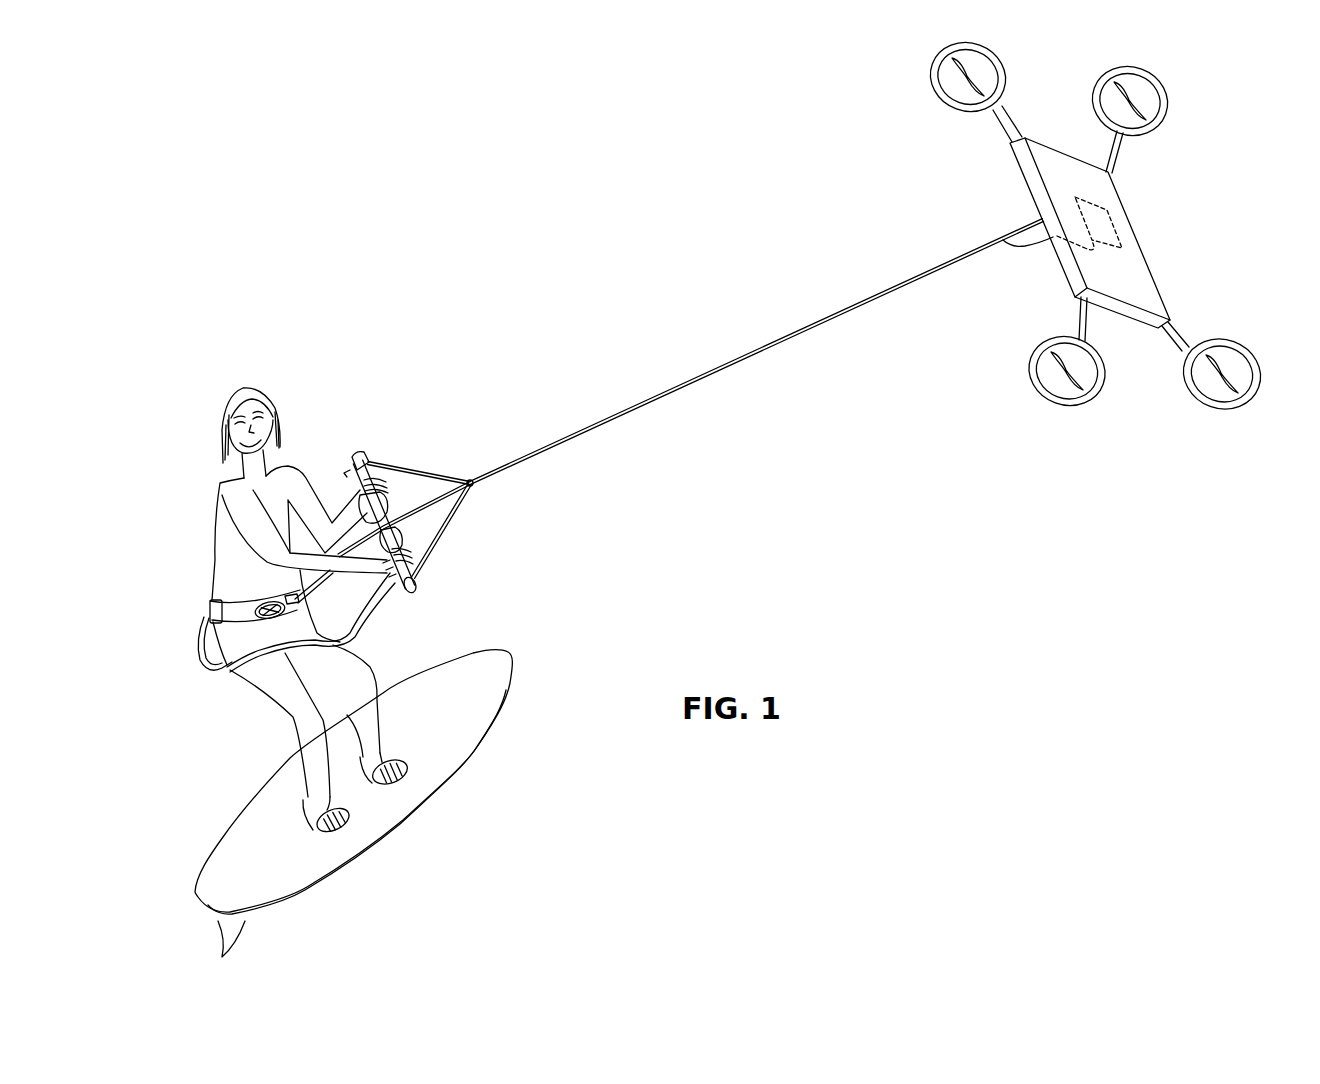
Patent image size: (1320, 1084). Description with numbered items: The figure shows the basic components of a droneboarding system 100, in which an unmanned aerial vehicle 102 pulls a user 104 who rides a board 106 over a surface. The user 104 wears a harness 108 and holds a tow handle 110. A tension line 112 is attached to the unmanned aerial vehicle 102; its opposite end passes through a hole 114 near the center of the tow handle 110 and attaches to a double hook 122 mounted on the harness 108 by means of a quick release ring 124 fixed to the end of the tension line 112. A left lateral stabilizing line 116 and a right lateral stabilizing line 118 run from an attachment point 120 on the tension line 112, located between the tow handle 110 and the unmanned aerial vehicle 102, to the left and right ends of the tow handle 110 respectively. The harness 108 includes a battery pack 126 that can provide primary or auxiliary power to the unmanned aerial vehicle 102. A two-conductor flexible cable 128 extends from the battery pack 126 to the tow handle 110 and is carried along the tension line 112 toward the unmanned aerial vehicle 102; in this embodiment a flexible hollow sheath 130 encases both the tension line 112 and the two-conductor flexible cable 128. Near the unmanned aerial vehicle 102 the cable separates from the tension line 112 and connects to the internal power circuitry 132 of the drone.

The droneboarding system 100 is at (571, 208).
The unmanned aerial vehicle 102 is at (1143, 445).
The user 104 is at (181, 438).
The board 106 is at (460, 763).
The harness 108 is at (218, 597).
The tow handle 110 is at (370, 458).
The tension line 112 is at (1010, 240).
The hole 114 is at (388, 504).
The left lateral stabilizing line 116 is at (410, 470).
The right lateral stabilizing line 118 is at (435, 548).
The attachment point 120 is at (470, 480).
The double hook 122 is at (268, 600).
The quick release ring 124 is at (263, 625).
The battery pack 126 is at (205, 611).
The two-conductor flexible cable 128 is at (200, 645).
The flexible hollow sheath 130 is at (688, 386).
The internal power circuitry 132 is at (1122, 240).